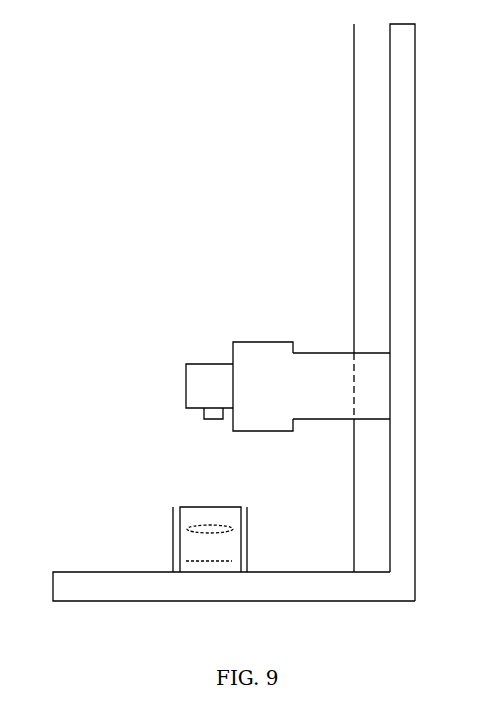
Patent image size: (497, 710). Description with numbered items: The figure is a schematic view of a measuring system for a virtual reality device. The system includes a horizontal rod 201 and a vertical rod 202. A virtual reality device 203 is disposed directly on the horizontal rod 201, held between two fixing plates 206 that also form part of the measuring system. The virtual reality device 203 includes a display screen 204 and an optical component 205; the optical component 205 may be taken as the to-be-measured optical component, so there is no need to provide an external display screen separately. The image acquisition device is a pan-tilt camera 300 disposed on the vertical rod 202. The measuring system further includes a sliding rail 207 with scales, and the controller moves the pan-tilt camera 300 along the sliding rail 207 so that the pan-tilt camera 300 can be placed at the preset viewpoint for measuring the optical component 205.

The horizontal rod 201 is at (67, 571).
The vertical rod 202 is at (416, 188).
The virtual reality device 203 is at (213, 506).
The display screen 204 is at (233, 560).
The optical component 205 is at (208, 522).
The fixing plates 206 is at (172, 548).
The sliding rail 207 is at (353, 117).
The pan-tilt camera 300 is at (268, 343).